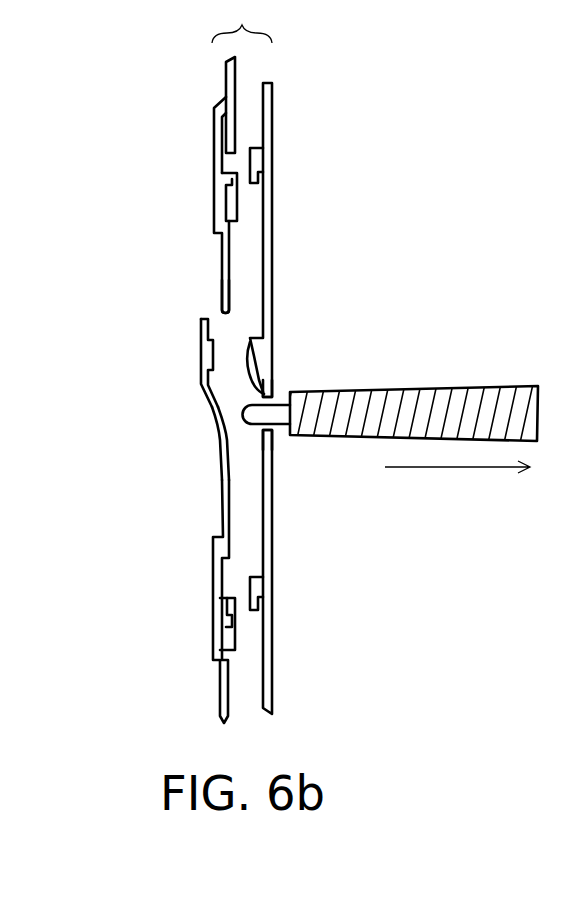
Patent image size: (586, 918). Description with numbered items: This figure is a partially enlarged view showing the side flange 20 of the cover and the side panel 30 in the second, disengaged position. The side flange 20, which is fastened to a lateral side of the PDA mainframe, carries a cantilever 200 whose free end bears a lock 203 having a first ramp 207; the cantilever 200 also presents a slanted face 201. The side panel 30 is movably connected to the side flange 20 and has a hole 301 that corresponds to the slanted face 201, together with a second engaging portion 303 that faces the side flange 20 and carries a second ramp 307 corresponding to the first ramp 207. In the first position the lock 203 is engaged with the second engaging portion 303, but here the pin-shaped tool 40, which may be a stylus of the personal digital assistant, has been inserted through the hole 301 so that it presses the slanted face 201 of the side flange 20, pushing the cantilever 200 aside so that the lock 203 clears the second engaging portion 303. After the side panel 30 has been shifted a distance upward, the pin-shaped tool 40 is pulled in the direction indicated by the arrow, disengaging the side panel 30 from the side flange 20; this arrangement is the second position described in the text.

The side flange 20 is at (217, 96).
The side panel 30 is at (271, 72).
The pin-shaped tool 40 is at (448, 386).
The cantilever 200 is at (223, 505).
The slanted face 201 is at (212, 427).
The lock 203 is at (200, 339).
The first ramp 207 is at (222, 297).
The hole 301 is at (276, 432).
The second engaging portion 303 is at (266, 347).
The second ramp 307 is at (270, 385).